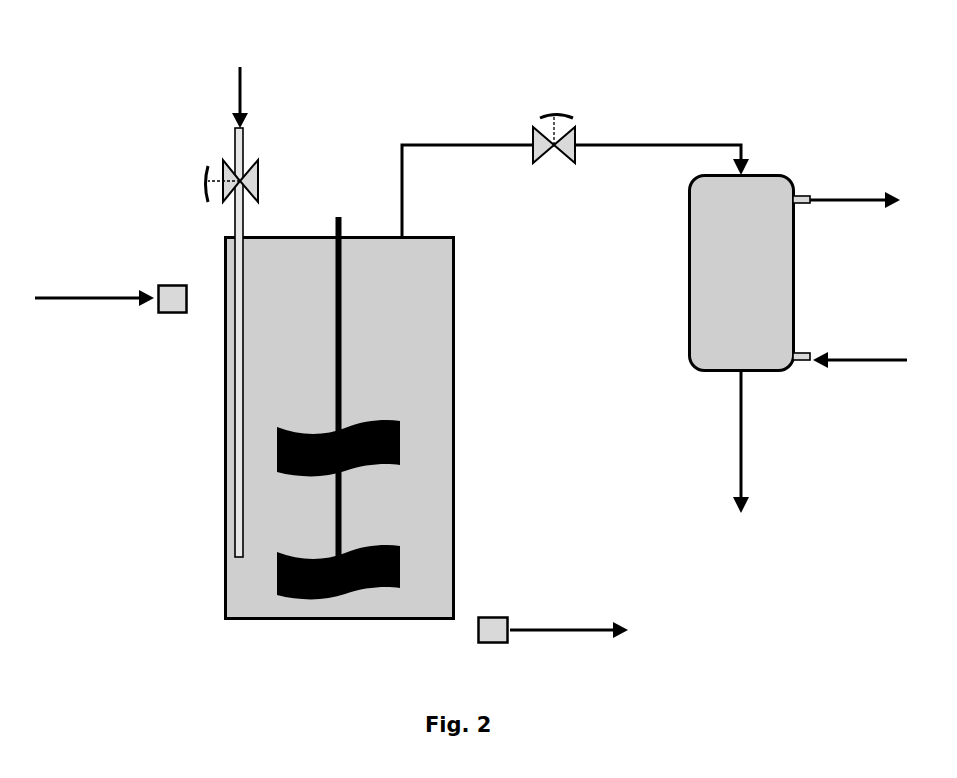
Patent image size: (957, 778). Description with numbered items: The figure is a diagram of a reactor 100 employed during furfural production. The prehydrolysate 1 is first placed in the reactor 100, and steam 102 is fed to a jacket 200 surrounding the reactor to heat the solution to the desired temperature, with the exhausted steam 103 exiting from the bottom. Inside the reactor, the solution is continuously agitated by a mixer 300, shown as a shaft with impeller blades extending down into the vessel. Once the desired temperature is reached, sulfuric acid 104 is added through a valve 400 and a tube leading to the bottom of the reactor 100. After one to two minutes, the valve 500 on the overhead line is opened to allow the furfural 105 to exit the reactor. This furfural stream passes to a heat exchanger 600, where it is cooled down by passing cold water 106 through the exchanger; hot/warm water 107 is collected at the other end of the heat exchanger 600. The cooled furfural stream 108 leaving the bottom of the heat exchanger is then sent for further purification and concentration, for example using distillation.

The prehydrolysate 1 is at (428, 357).
The reactor 100 is at (223, 577).
The jacket 200 is at (183, 442).
The mixer 300 is at (400, 443).
The valve 400 is at (205, 165).
The valve 500 is at (545, 112).
The heat exchanger 600 is at (690, 323).
The steam 102 is at (108, 295).
The exhausted steam 103 is at (557, 628).
The sulfuric acid 104 is at (238, 102).
The furfural 105 is at (418, 142).
The cold water 106 is at (868, 358).
The hot/warm water 107 is at (830, 196).
The furfural stream 108 is at (742, 413).